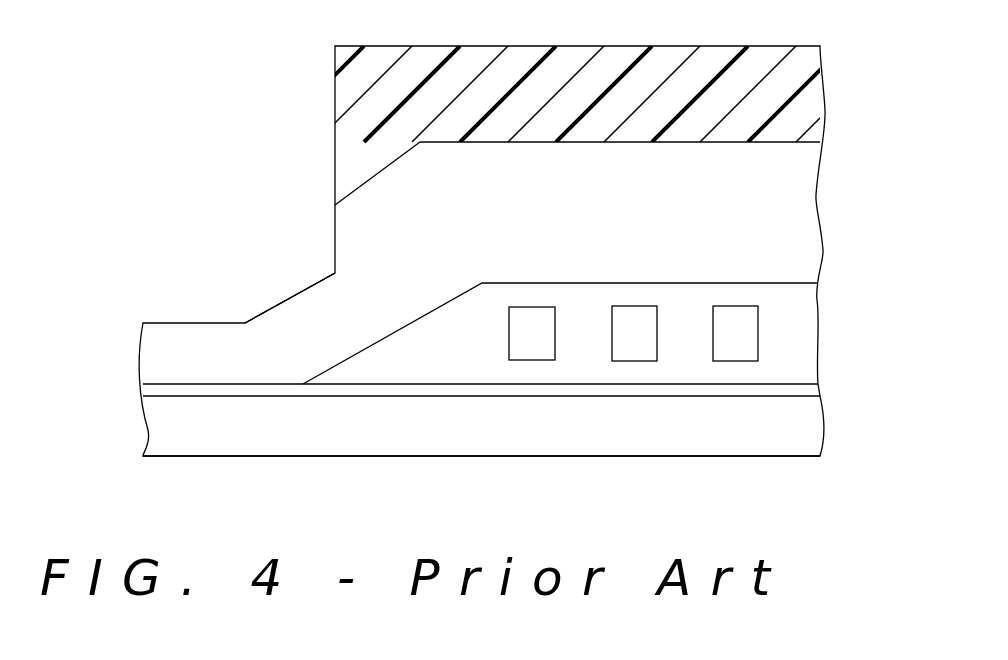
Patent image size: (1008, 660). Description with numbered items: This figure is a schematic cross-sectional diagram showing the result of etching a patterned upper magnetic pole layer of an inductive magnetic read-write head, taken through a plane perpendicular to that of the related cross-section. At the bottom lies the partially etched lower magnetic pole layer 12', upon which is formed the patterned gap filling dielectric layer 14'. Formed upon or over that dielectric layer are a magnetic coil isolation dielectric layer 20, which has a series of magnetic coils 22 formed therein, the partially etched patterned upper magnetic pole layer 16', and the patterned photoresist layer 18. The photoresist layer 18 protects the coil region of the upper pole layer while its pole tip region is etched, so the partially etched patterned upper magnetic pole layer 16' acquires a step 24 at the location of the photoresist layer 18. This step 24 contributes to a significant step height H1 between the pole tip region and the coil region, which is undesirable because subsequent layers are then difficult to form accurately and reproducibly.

The partially etched lower magnetic pole layer 12' is at (437, 440).
The patterned gap filling dielectric layer 14' is at (437, 388).
The partially etched patterned upper magnetic pole layer 16' is at (523, 251).
The patterned photoresist layer 18 is at (803, 102).
The magnetic coil isolation dielectric layer 20 is at (805, 354).
The magnetic coils 22 is at (533, 315).
The step 24 is at (310, 269).
The step height H1 is at (92, 142).